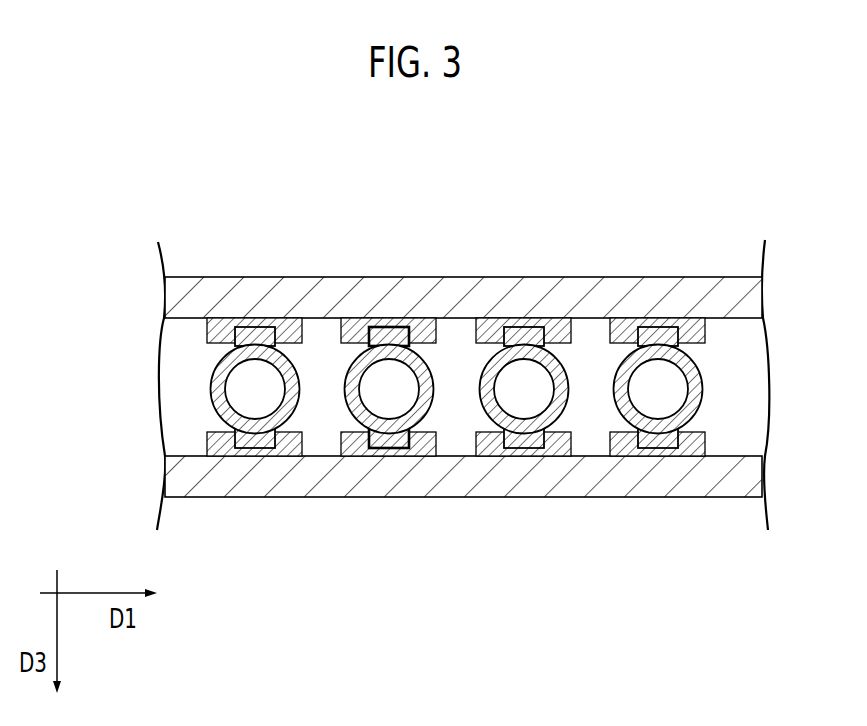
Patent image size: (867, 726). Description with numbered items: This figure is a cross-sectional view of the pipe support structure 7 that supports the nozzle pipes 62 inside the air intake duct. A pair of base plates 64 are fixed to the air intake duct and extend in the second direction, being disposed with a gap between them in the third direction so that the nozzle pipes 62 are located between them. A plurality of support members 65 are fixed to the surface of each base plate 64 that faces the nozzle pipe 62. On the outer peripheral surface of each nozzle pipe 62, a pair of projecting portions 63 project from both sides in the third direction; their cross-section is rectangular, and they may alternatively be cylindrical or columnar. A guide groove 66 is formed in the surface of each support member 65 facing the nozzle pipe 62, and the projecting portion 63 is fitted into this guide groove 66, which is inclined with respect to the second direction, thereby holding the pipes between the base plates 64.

The support structure 7 is at (114, 195).
The nozzle pipe 62 is at (213, 382).
The projecting portion 63 is at (251, 333).
The base plate 64 is at (437, 295).
The support member 65 is at (214, 330).
The guide groove 66 is at (386, 333).